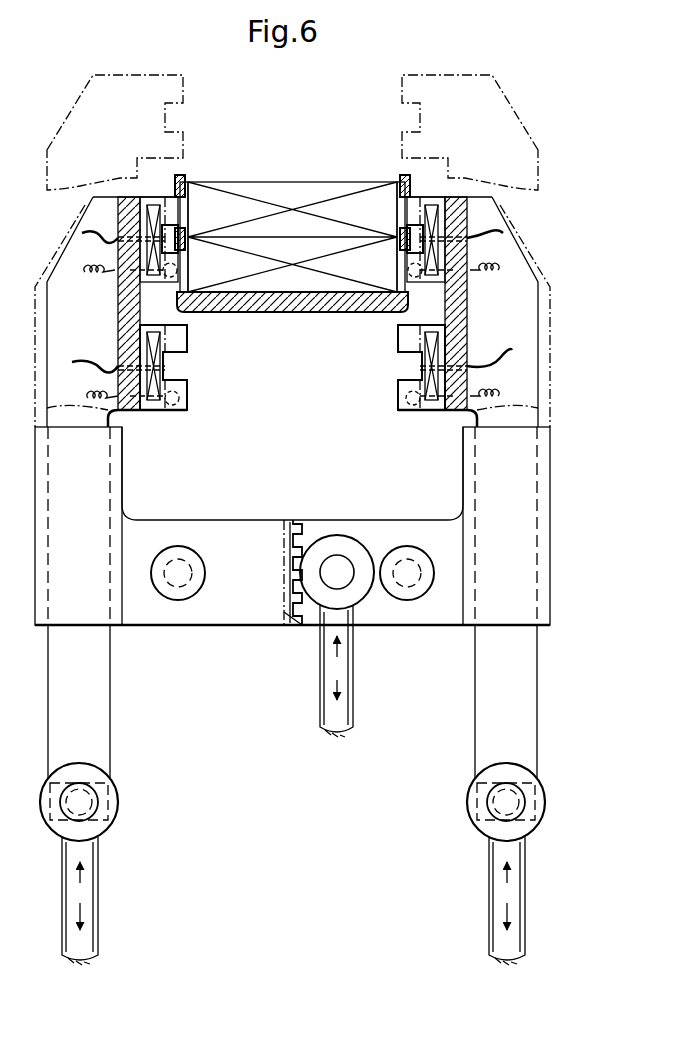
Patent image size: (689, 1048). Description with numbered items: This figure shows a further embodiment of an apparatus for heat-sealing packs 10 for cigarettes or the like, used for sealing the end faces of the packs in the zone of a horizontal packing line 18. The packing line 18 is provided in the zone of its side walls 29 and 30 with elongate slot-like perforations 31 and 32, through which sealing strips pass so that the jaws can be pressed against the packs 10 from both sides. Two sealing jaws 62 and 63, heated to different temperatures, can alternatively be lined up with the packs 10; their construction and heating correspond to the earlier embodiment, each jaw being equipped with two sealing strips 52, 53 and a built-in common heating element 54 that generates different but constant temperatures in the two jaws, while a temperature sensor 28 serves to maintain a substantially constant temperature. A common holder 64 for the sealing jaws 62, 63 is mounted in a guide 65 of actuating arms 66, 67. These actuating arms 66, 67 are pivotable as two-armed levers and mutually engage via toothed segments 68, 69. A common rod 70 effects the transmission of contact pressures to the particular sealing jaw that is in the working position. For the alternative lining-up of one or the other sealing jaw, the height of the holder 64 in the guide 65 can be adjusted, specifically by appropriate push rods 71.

The packs 10 is at (270, 242).
The horizontal packing line 18 is at (300, 317).
The temperature sensor 28 is at (400, 402).
The side wall 29 is at (184, 173).
The side wall 30 is at (399, 182).
The perforation 31 is at (412, 195).
The perforation 32 is at (396, 315).
The sealing strip 52 is at (188, 341).
The sealing strip 53 is at (188, 399).
The heating element 54 is at (166, 366).
The sealing jaw 62 is at (147, 195).
The sealing jaw 63 is at (179, 420).
The common holder 64 is at (97, 736).
The guide 65 is at (122, 479).
The actuating arm 66 is at (210, 612).
The actuating arm 67 is at (442, 616).
The toothed segment 68 is at (284, 624).
The toothed segment 69 is at (298, 527).
The common rod 70 is at (353, 719).
The push rod 71 is at (92, 903).